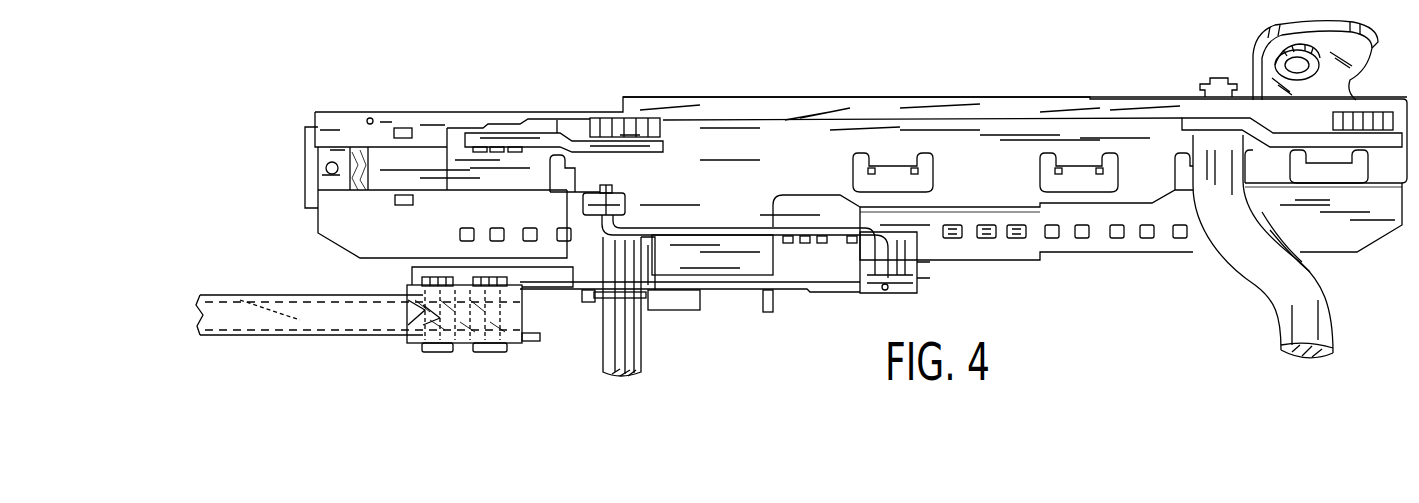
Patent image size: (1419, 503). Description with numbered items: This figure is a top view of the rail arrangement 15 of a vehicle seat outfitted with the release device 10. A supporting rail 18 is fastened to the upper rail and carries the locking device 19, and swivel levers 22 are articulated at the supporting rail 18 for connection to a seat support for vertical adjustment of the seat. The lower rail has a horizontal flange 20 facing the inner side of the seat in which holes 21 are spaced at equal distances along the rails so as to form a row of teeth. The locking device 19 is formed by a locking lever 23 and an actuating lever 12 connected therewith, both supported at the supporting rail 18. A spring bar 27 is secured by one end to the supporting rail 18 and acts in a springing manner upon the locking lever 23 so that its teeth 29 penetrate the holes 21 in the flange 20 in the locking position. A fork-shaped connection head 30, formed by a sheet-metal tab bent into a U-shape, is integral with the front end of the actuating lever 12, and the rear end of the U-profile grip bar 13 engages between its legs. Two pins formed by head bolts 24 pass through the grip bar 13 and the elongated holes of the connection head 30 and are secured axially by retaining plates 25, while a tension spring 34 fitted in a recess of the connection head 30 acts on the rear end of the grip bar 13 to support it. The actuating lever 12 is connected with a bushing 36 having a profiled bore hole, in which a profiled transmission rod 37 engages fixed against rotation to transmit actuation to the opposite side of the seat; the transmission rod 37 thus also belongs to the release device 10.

The release device 10 is at (856, 129).
The actuating lever 12 is at (722, 290).
The grip bar 13 is at (252, 318).
The rail arrangement 15 is at (1057, 84).
The supporting rail 18 is at (792, 167).
The locking device 19 is at (585, 316).
The horizontal flange 20 is at (1155, 243).
The holes 21 is at (530, 229).
The swivel levers 22 is at (568, 140).
The locking lever 23 is at (842, 278).
The head bolts 24 is at (410, 337).
The retaining plates 25 is at (437, 352).
The spring bar 27 is at (718, 228).
The teeth 29 is at (1015, 240).
The connection head 30 is at (470, 345).
The tension spring 34 is at (420, 325).
The bushing 36 is at (620, 262).
The transmission rod 37 is at (623, 355).